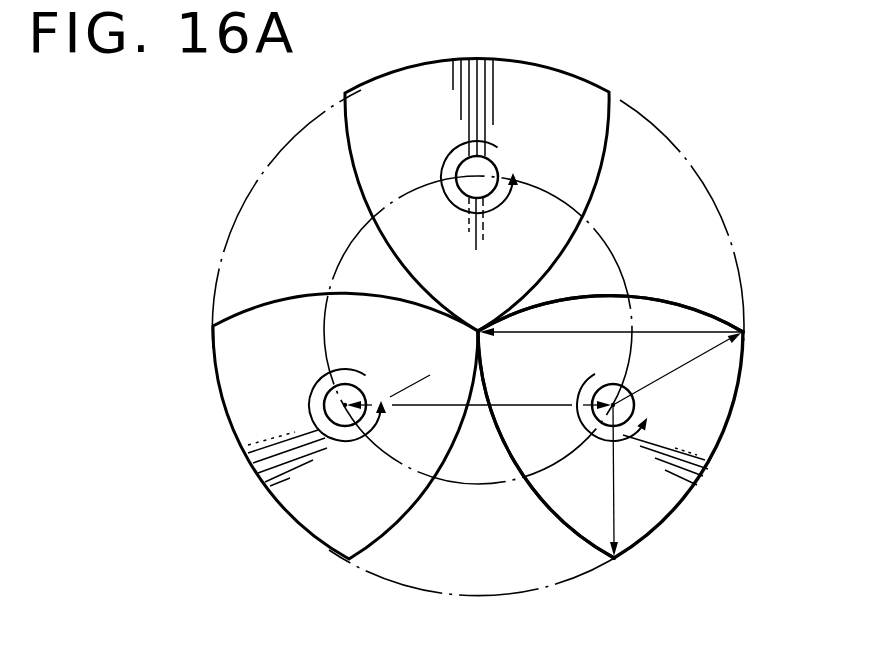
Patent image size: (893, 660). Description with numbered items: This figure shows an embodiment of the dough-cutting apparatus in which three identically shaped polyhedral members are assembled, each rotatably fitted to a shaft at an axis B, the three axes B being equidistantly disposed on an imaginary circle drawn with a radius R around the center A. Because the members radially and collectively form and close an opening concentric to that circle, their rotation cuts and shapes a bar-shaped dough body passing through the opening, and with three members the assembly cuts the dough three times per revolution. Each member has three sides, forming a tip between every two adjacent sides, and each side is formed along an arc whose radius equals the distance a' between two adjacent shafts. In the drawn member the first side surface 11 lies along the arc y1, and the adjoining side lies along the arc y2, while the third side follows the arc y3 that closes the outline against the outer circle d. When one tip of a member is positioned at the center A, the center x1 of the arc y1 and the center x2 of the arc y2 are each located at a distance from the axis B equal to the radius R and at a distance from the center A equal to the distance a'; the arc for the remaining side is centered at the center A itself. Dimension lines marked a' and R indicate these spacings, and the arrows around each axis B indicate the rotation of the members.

The first side surface 11 is at (629, 406).
The outer circle diameter d is at (723, 220).
The arc y1 is at (553, 515).
The arc y2 is at (692, 307).
The lobe outer arc y3 is at (718, 448).
The center of the arc y1 x1 is at (768, 335).
The center of the arc y2 x2 is at (637, 573).
The center A is at (476, 310).
The axis B is at (345, 412).
The distance between two adjacent axes a' is at (545, 356).
The radius R is at (675, 444).